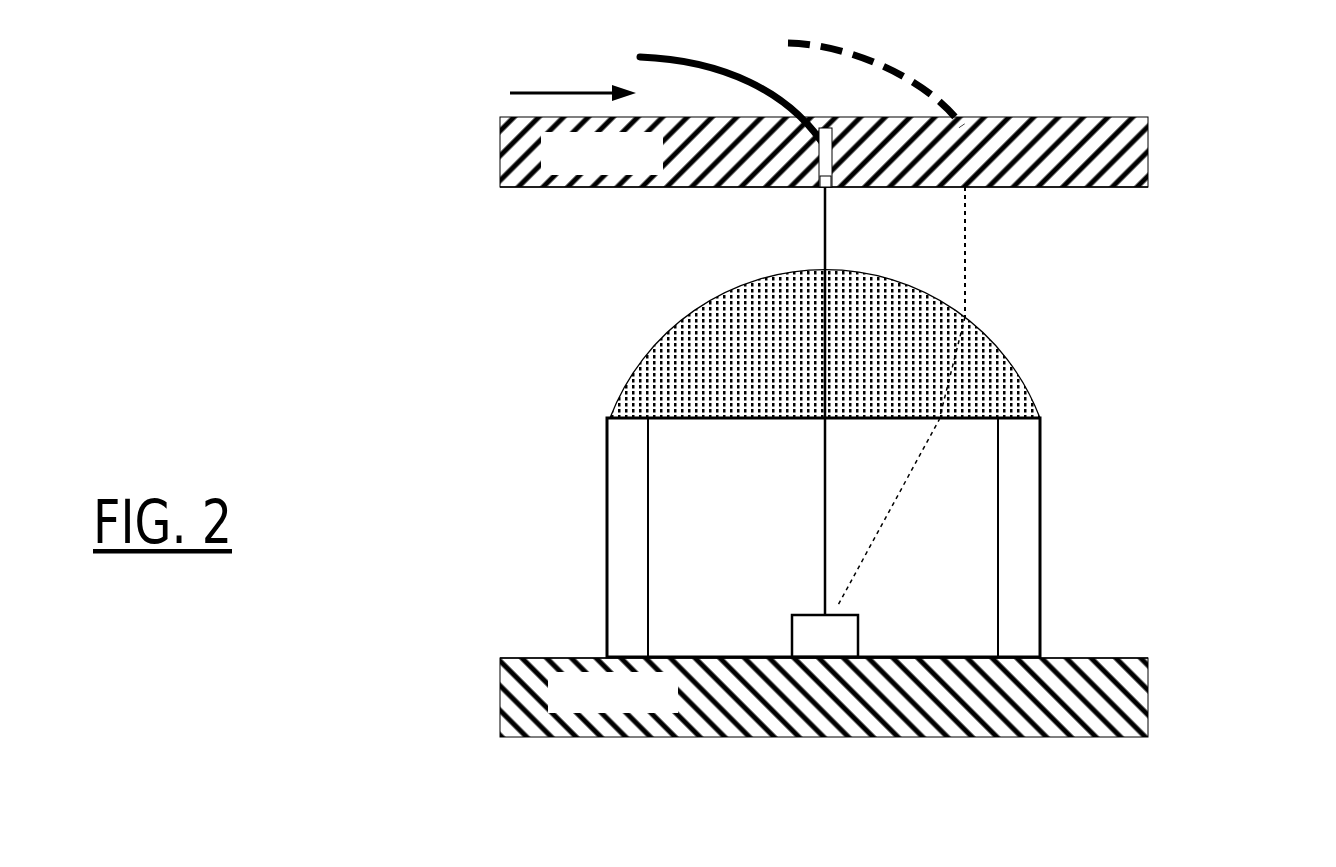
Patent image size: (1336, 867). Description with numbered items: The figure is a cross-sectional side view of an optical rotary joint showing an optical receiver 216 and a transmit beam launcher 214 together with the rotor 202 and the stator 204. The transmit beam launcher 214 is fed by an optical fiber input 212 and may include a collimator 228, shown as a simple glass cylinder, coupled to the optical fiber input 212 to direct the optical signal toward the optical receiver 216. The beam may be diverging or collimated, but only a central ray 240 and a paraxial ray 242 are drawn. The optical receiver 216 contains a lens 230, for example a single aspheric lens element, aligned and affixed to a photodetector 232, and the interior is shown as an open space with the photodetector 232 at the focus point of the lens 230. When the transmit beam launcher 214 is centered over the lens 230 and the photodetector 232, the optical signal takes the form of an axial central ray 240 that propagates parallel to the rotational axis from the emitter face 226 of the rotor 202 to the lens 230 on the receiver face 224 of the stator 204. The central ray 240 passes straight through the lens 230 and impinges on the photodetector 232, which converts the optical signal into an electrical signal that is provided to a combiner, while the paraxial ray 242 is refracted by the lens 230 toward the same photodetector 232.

The rotor 202 is at (1110, 117).
The stator 204 is at (1147, 700).
The optical fiber input 212 is at (699, 60).
The transmit beam launcher 214 is at (804, 165).
The optical receiver 216 is at (1114, 353).
The receiver face 224 is at (1128, 652).
The emitter face 226 is at (1093, 187).
The collimator 228 is at (817, 193).
The lens 230 is at (626, 357).
The photodetector 232 is at (857, 628).
The central ray 240 is at (823, 267).
The paraxial ray 242 is at (965, 300).